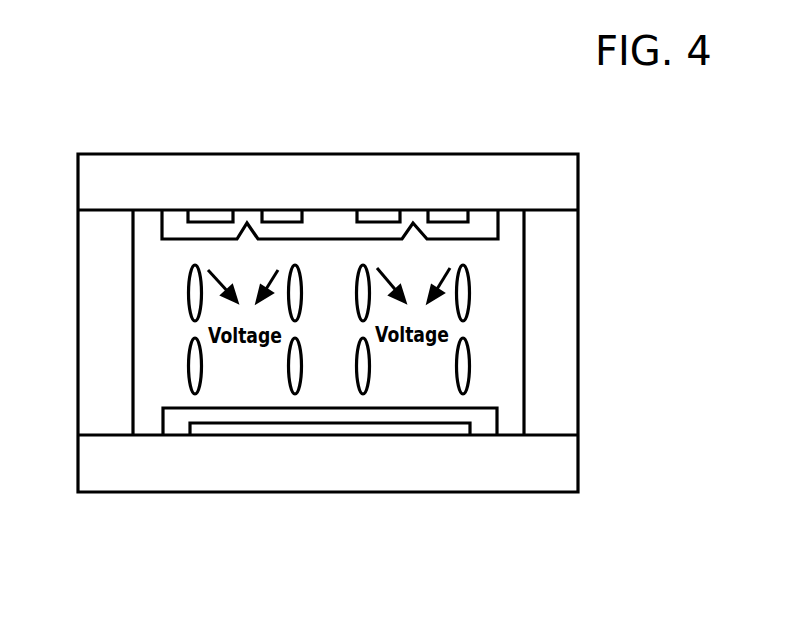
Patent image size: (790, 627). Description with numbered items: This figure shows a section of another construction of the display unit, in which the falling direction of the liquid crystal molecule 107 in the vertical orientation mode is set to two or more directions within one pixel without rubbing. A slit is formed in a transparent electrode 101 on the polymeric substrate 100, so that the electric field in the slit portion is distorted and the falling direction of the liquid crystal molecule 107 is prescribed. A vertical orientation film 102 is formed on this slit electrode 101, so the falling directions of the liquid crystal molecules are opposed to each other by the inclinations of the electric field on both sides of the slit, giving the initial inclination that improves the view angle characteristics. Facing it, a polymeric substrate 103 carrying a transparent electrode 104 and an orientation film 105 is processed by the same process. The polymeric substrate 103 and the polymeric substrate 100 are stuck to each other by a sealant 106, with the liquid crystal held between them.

The polymeric substrate 100 is at (118, 168).
The transparent electrode 101 is at (282, 217).
The vertical orientation film 102 is at (222, 236).
The polymeric substrate 103 is at (115, 463).
The transparent electrode 104 is at (438, 430).
The orientation film 105 is at (340, 412).
The sealant 106 is at (557, 282).
The liquid crystal molecule 107 is at (465, 365).